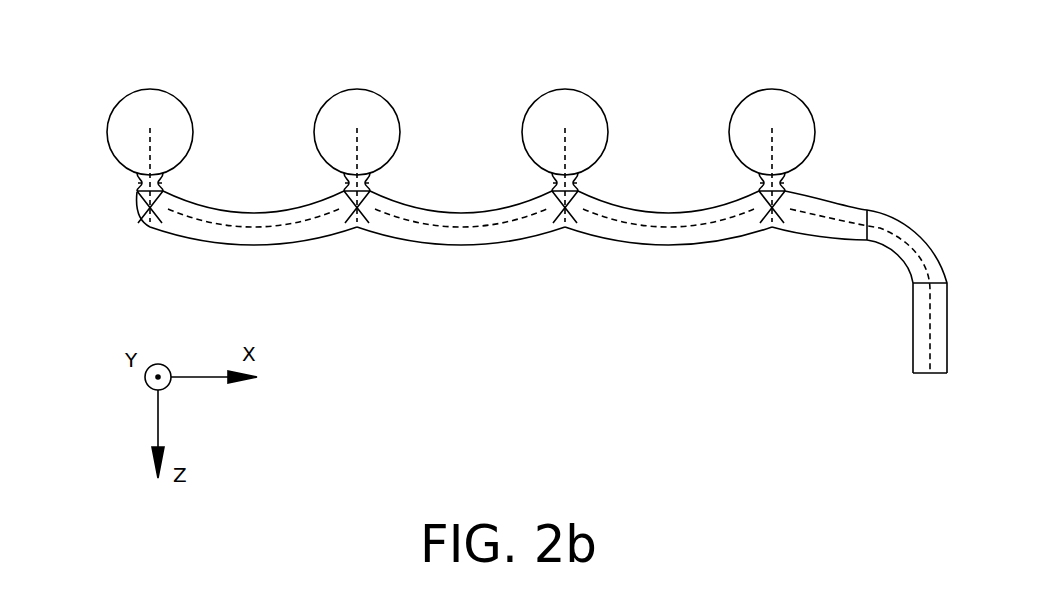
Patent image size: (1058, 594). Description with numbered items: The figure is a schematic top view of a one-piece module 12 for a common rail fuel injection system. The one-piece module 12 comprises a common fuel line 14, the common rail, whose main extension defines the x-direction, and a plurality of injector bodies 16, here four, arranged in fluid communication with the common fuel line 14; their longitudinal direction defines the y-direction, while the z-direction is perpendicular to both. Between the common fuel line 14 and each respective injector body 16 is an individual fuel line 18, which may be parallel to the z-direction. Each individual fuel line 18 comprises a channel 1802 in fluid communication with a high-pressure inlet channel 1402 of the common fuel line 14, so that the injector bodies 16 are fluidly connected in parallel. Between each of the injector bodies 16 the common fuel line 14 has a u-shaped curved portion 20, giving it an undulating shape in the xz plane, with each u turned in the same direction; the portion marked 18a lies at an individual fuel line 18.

The one-piece module 12 is at (150, 245).
The common fuel line 14 is at (542, 282).
The high-pressure inlet channel 1402 is at (497, 234).
The injector body 16 is at (154, 108).
The individual fuel line 18 is at (136, 191).
The neck 18a is at (166, 184).
The channel 1802 is at (141, 183).
The curved portion 20 is at (251, 242).